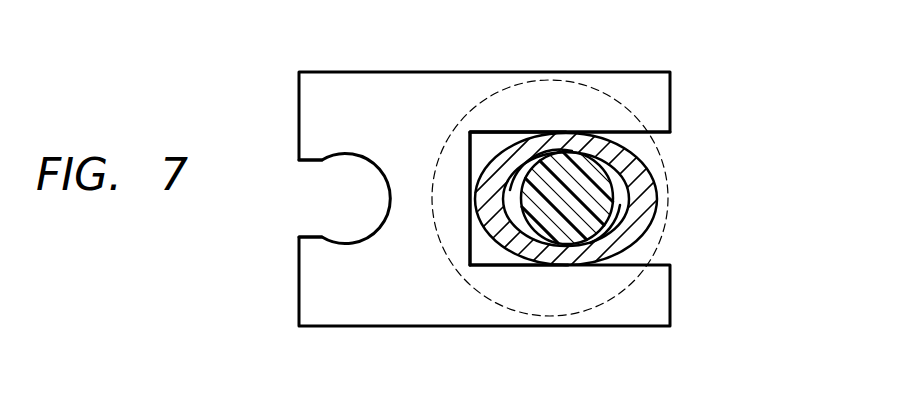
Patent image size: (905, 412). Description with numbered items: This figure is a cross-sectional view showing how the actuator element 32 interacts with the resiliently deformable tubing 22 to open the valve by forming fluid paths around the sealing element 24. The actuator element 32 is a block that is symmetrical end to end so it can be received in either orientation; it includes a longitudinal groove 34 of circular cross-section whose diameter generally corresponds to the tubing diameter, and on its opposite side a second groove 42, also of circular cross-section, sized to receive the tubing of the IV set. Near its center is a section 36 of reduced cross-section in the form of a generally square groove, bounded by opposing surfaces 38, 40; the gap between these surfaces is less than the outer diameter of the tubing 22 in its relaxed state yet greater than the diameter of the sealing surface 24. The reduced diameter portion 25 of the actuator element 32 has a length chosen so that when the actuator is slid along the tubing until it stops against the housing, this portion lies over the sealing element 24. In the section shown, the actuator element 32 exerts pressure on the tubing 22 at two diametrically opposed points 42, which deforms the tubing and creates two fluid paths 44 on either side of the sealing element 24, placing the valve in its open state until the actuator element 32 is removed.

The resiliently deformable tubing 22 is at (637, 225).
The sealing element 24 is at (597, 187).
The reduced diameter portion of the actuator element 25 is at (670, 132).
The actuator element 32 is at (657, 90).
The longitudinal groove 34 is at (512, 316).
The section of reduced cross-section 36 is at (468, 195).
The opposing surface 38 is at (637, 263).
The opposing surface 40 is at (636, 133).
The second groove / diametrically opposed pressure points 42 is at (313, 236).
The fluid paths 44 is at (512, 187).